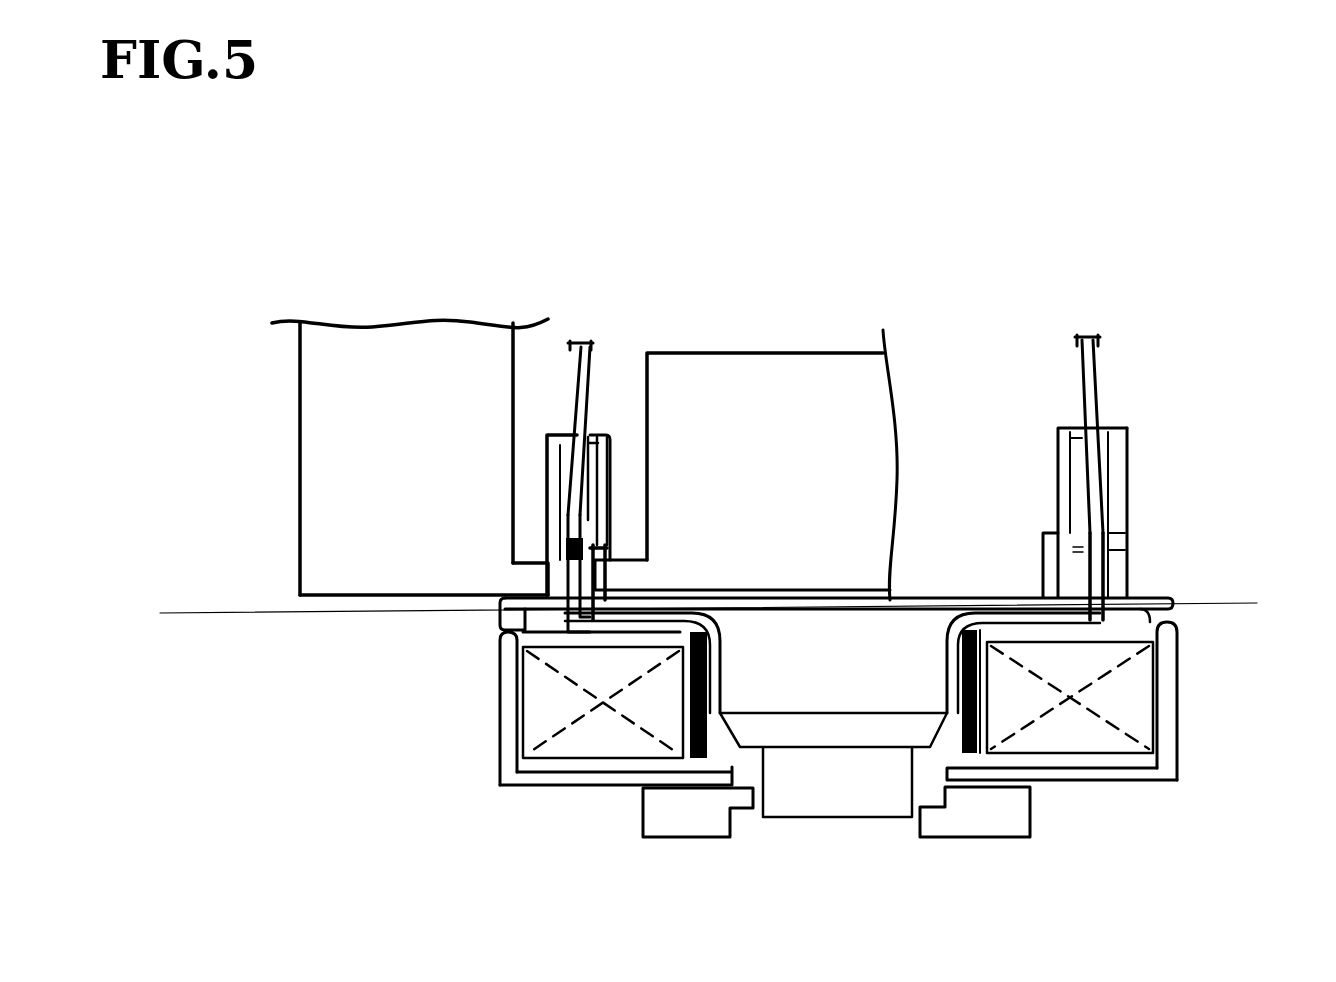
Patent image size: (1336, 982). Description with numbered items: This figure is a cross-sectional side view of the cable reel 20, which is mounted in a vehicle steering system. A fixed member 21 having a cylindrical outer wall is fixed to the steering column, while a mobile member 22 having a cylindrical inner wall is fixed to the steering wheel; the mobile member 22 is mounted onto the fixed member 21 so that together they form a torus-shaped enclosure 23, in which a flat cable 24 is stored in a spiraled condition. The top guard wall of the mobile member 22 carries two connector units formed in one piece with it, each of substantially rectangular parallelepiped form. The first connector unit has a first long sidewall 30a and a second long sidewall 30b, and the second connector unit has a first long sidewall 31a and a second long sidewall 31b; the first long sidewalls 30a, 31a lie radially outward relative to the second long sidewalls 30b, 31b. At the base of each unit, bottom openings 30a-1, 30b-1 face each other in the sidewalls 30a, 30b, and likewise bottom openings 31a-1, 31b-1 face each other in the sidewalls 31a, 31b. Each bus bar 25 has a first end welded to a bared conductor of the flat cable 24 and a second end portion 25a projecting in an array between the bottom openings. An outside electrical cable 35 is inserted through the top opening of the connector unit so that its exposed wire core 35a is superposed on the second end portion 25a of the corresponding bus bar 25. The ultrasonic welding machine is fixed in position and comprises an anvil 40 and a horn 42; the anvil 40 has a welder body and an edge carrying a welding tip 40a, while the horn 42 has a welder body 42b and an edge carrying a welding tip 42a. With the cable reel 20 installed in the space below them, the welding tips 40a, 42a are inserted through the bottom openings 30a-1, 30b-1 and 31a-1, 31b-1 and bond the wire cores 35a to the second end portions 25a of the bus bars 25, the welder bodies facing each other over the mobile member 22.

The cable reel 20 is at (1199, 706).
The fixed member 21 is at (1097, 775).
The mobile member 22 is at (1150, 600).
The torus-shaped enclosure 23 is at (1148, 672).
The flat cable 24 is at (538, 733).
The bus bar 25 is at (655, 630).
The second end portion 25a is at (600, 545).
The first long sidewall 30a is at (1130, 453).
The bottom opening 30a-1 is at (1133, 580).
The second long sidewall 30b is at (1057, 435).
The bottom opening 30b-1 is at (1043, 570).
The first long sidewall 31a is at (547, 473).
The bottom opening 31a-1 is at (555, 490).
The second long sidewall 31b is at (613, 467).
The bottom opening 31b-1 is at (612, 580).
The electrical cable 35 is at (587, 380).
The wire core 35a is at (502, 734).
The anvil 40 is at (797, 378).
The welding tip 40a is at (607, 580).
The horn 42 is at (327, 453).
The welding tip 42a is at (537, 553).
The welder body 42b is at (332, 522).